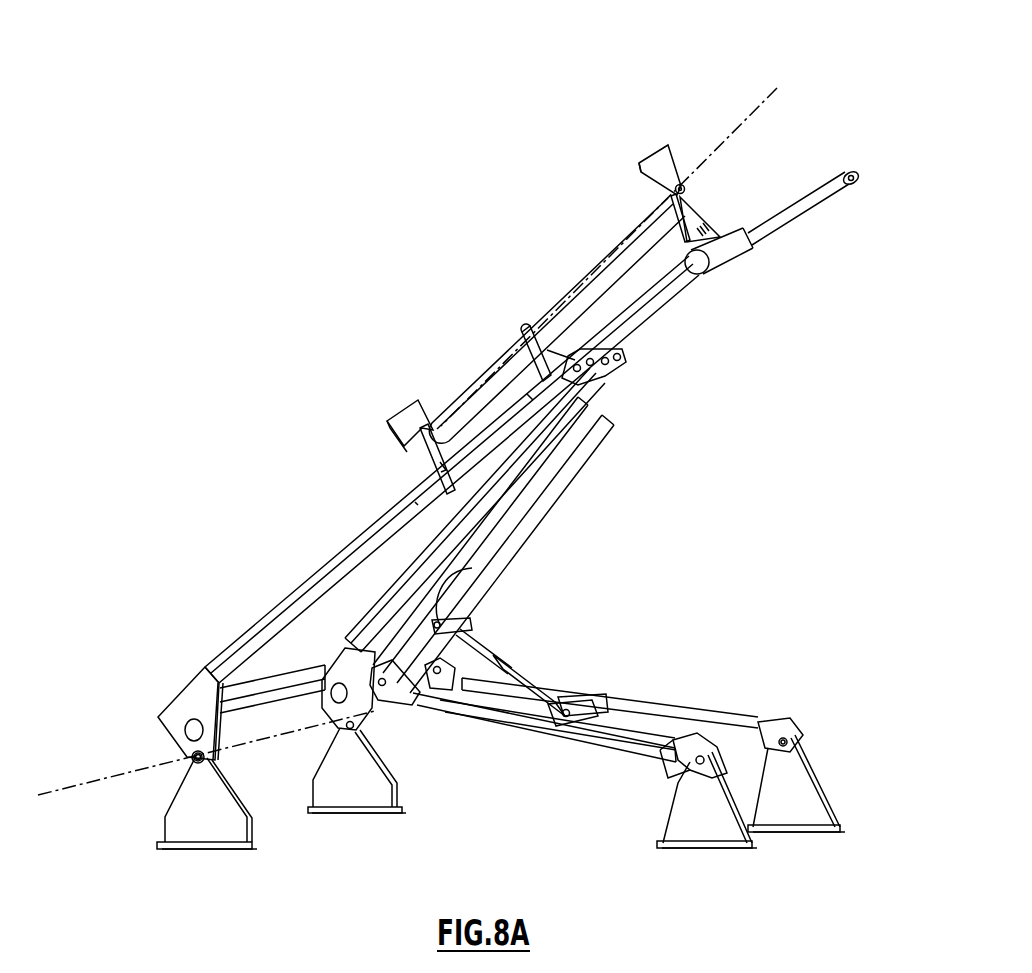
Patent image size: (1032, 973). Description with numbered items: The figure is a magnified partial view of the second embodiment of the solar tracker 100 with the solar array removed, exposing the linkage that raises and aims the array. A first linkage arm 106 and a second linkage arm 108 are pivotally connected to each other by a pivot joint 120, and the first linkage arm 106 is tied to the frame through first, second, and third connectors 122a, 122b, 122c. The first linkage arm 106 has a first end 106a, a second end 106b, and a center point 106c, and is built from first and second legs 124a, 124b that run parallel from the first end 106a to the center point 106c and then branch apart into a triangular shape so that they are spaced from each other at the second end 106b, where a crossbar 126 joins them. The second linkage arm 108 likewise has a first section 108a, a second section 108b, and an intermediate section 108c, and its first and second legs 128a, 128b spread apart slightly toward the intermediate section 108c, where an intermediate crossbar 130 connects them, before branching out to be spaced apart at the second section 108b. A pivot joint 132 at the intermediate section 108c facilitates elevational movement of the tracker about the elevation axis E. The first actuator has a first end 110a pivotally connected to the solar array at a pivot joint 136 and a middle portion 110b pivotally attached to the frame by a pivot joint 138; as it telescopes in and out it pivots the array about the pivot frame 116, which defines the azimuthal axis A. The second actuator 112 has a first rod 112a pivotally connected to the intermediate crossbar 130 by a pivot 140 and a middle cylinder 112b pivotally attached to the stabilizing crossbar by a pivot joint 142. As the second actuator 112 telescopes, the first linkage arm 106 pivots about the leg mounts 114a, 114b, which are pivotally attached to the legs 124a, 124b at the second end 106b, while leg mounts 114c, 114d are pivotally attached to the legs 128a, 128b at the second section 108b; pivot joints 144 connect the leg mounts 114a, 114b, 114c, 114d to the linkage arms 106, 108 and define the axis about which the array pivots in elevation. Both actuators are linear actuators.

The solar tracker 100 is at (718, 62).
The first linkage arm 106 is at (423, 515).
The first end 106a is at (527, 393).
The second end 106b is at (233, 660).
The center point 106c is at (415, 502).
The second linkage arm 108 is at (589, 594).
The first section 108a is at (600, 413).
The second section 108b is at (730, 710).
The intermediate section 108c is at (385, 708).
The first end 110a is at (725, 257).
The middle portion 110b is at (796, 208).
The second actuator 112 is at (545, 666).
The first rod 112a is at (460, 637).
The middle cylinder 112b is at (568, 690).
The leg mount 114a is at (367, 813).
The leg mount 114b is at (200, 793).
The leg mount 114c is at (803, 777).
The leg mount 114d is at (697, 813).
The pivot frame 116 is at (623, 240).
The pivot joint 120 is at (627, 357).
The first connector 122a is at (437, 453).
The second connector 122b is at (527, 330).
The third connector 122c is at (700, 216).
The first leg 124a is at (352, 630).
The second leg 124b is at (302, 593).
The crossbar 126 is at (277, 693).
The first leg 128a is at (665, 675).
The second leg 128b is at (567, 727).
The intermediate crossbar 130 is at (468, 627).
The pivot joint 132 is at (342, 727).
The pivot joint 136 is at (681, 184).
The pivot joint 138 is at (853, 173).
The pivot 140 is at (470, 569).
The pivot joint 142 is at (558, 716).
The pivot joints 144 is at (193, 757).
The azimuthal axis A is at (770, 96).
The elevation axis E is at (78, 784).